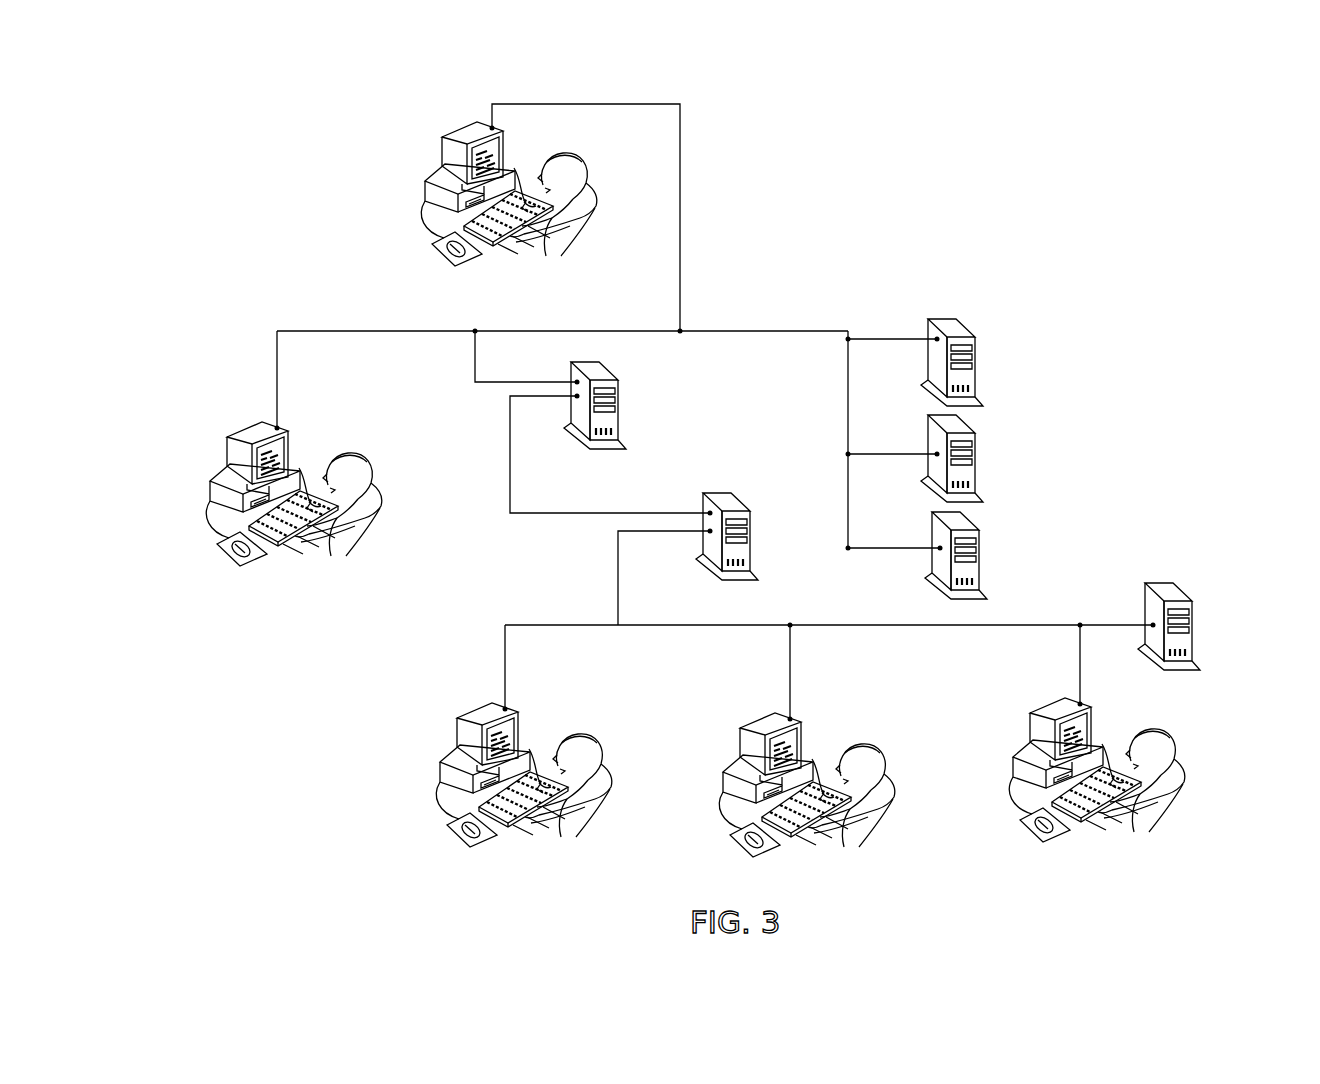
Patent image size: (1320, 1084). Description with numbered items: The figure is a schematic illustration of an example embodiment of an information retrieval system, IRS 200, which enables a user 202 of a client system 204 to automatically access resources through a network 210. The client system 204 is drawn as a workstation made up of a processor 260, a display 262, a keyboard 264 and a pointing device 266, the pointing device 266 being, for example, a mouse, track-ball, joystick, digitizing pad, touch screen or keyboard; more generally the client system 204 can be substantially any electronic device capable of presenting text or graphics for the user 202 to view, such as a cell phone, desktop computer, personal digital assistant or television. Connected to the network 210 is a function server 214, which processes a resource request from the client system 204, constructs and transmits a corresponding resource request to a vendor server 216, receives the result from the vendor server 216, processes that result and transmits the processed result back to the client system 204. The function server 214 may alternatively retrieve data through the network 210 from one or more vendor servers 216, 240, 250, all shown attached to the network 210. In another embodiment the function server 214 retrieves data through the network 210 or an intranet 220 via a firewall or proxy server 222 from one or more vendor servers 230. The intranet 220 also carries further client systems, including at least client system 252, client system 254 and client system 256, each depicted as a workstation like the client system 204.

The IRS 200 is at (877, 168).
The user 202 is at (353, 494).
The client system 204 is at (519, 153).
The network 210 is at (585, 320).
The function server 214 is at (619, 418).
The vendor server 216 is at (979, 376).
The intranet 220 is at (830, 614).
The firewall or proxy server 222 is at (752, 551).
The vendor server 230 is at (1197, 638).
The vendor server 240 is at (979, 468).
The vendor server 250 is at (982, 566).
The client system 252 is at (539, 720).
The client system 254 is at (822, 730).
The client system 256 is at (1113, 713).
The processor 260 is at (228, 480).
The display 262 is at (235, 444).
The keyboard 264 is at (327, 472).
The pointing device 266 is at (214, 536).